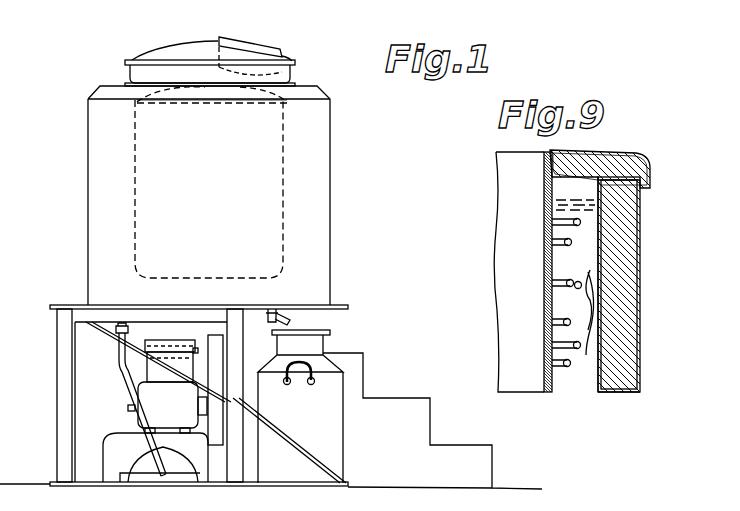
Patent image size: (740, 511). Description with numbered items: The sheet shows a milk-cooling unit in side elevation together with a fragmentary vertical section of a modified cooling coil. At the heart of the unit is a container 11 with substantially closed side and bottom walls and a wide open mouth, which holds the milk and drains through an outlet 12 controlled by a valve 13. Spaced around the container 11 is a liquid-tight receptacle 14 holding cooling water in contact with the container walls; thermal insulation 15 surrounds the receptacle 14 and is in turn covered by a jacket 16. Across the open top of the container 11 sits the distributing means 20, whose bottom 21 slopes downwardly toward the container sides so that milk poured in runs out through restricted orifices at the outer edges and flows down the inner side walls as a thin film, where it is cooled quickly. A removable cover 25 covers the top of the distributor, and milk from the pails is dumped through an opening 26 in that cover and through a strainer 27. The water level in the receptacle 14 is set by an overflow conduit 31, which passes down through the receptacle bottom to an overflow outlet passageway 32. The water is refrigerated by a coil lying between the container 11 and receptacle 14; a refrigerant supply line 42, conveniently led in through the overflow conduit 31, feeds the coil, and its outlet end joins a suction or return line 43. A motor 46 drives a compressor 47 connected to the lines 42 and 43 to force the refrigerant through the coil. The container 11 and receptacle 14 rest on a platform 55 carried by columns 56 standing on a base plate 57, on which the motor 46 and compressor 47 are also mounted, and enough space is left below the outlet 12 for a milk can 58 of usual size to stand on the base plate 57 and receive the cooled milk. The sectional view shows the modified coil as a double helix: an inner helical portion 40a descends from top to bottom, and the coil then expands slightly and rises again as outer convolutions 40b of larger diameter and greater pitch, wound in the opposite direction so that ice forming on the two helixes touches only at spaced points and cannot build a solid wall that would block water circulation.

In FIG. 1, the container 11 is at (285, 192).
In FIG. 9, the container 11 is at (546, 291).
In FIG. 1, the outlet 12 is at (283, 309).
In FIG. 1, the valve 13 is at (240, 343).
In FIG. 9, the receptacle 14 is at (598, 381).
In FIG. 9, the thermal insulation 15 is at (616, 158).
In FIG. 1, the jacket 16 is at (88, 172).
In FIG. 9, the jacket 16 is at (640, 357).
In FIG. 1, the distributing means 20 is at (128, 74).
In FIG. 1, the bottom 21 is at (249, 97).
In FIG. 1, the removable cover 25 is at (172, 48).
In FIG. 1, the opening 26 is at (266, 47).
In FIG. 1, the strainer 27 is at (306, 73).
In FIG. 1, the overflow conduit 31 is at (121, 325).
In FIG. 1, the overflow outlet passageway 32 is at (117, 329).
In FIG. 9, the inner helical portion 40a is at (560, 241).
In FIG. 9, the outer helical convolutions 40b is at (581, 301).
In FIG. 1, the refrigerant supply line 42 is at (123, 390).
In FIG. 1, the suction or return line 43 is at (122, 359).
In FIG. 1, the motor 46 is at (155, 432).
In FIG. 1, the compressor 47 is at (171, 361).
In FIG. 1, the platform 55 is at (67, 305).
In FIG. 1, the columns 56 is at (62, 375).
In FIG. 1, the base plate 57 is at (250, 483).
In FIG. 1, the milk can 58 is at (335, 456).